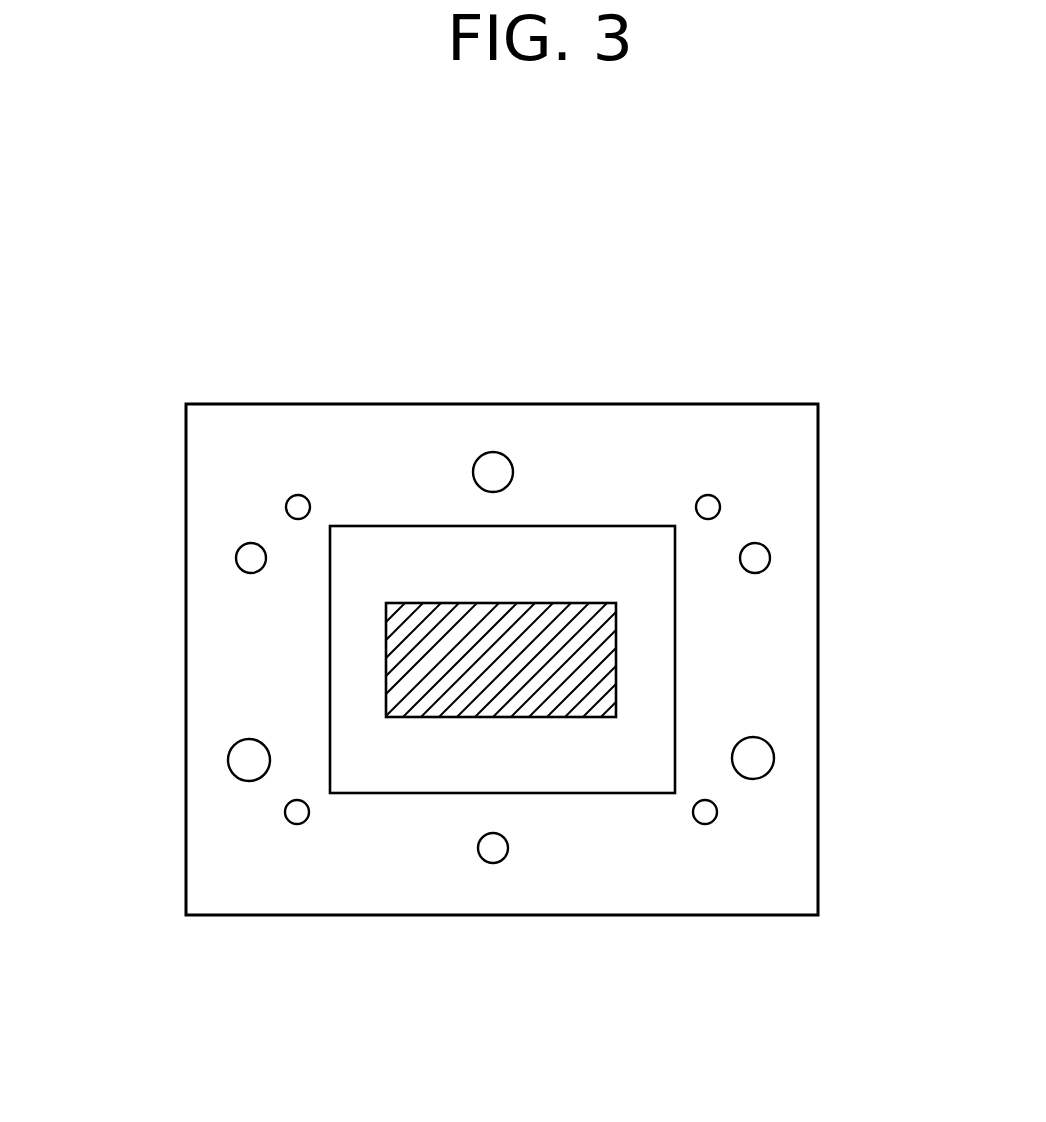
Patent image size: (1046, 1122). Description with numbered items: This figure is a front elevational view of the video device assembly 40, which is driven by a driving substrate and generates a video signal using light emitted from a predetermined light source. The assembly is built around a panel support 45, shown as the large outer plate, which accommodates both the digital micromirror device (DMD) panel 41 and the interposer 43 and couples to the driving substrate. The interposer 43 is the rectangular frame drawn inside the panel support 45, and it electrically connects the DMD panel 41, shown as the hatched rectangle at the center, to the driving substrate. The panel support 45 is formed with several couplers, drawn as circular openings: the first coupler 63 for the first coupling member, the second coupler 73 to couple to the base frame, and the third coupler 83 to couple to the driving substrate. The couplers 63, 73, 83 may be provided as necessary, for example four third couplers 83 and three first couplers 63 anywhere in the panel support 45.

The video device assembly 40 is at (761, 308).
The panel support 45 is at (795, 442).
The interposer 43 is at (663, 605).
The digital micromirror device (DMD) panel 41 is at (605, 661).
The first coupler 63 is at (491, 452).
The second coupler 73 is at (236, 558).
The third coupler 83 is at (286, 507).